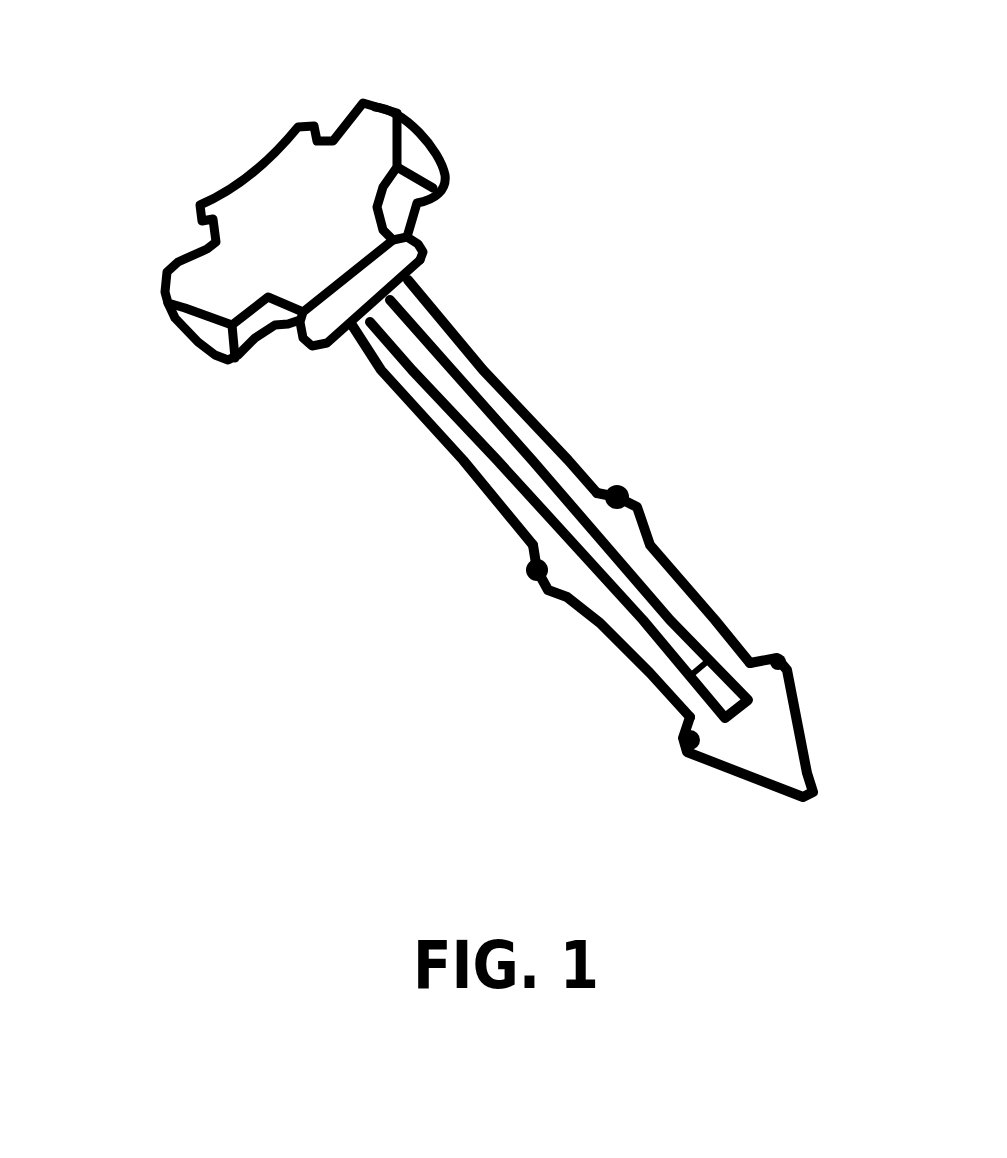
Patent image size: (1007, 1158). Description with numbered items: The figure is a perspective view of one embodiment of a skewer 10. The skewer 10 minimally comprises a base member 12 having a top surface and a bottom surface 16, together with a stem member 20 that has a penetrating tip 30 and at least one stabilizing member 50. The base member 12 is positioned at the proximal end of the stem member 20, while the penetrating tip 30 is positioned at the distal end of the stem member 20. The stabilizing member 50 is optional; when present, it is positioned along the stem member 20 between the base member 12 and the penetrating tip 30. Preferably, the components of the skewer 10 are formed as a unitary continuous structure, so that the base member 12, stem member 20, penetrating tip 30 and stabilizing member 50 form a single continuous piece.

The skewer 10 is at (533, 99).
The base member 12 is at (403, 117).
The bottom surface 16 is at (427, 217).
The stem member 20 is at (450, 447).
The penetrating tip 30 is at (675, 752).
The stabilizing member 50 is at (640, 500).